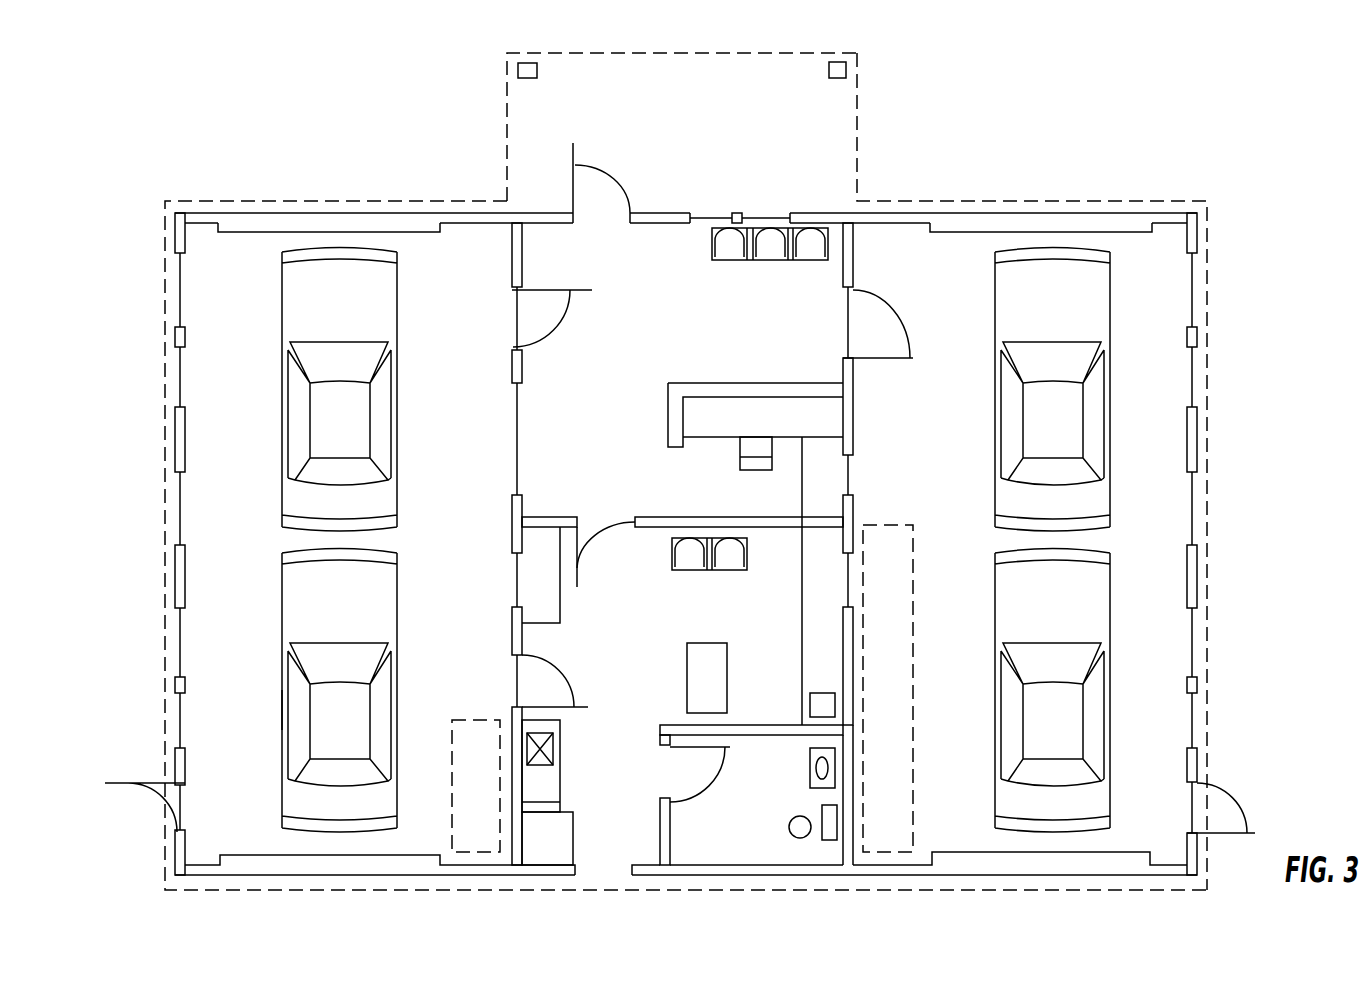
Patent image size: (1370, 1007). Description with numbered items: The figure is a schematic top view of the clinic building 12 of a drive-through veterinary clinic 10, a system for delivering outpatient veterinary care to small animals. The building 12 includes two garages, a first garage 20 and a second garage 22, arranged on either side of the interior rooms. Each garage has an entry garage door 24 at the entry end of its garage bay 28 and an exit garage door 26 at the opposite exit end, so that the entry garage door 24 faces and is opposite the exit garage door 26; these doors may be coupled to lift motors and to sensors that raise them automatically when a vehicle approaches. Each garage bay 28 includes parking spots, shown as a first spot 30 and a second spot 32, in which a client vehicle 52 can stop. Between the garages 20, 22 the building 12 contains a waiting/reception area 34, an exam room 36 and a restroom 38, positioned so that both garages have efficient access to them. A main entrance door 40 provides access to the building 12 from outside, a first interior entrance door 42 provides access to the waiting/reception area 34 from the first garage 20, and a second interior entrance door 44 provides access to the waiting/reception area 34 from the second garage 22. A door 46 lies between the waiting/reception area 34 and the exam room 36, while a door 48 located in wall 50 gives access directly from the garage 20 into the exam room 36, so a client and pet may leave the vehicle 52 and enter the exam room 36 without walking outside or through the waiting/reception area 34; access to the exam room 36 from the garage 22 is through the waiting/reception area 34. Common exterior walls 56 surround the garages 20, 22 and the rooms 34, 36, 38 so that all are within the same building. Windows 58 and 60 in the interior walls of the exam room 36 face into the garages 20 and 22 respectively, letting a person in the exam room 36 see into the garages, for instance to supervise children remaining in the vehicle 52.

The drive-through veterinary clinic 10 is at (1070, 103).
The clinic building 12 is at (898, 213).
The first garage 20 is at (145, 182).
The second garage 22 is at (1230, 227).
The entry garage door 24 is at (350, 855).
The exit garage door 26 is at (358, 212).
The garage bay 28 is at (435, 828).
The first spot 30 is at (273, 662).
The second spot 32 is at (270, 327).
The waiting/reception area 34 is at (683, 307).
The exam room 36 is at (783, 580).
The restroom 38 is at (735, 823).
The main entrance door 40 is at (572, 158).
The first interior entrance door 42 is at (552, 289).
The second interior entrance door 44 is at (875, 362).
The door 46 is at (578, 545).
The door 48 is at (585, 708).
The wall 50 is at (517, 512).
The vehicle 52 is at (280, 710).
The common exterior walls 56 is at (173, 437).
The window 58 is at (515, 575).
The window 60 is at (850, 585).